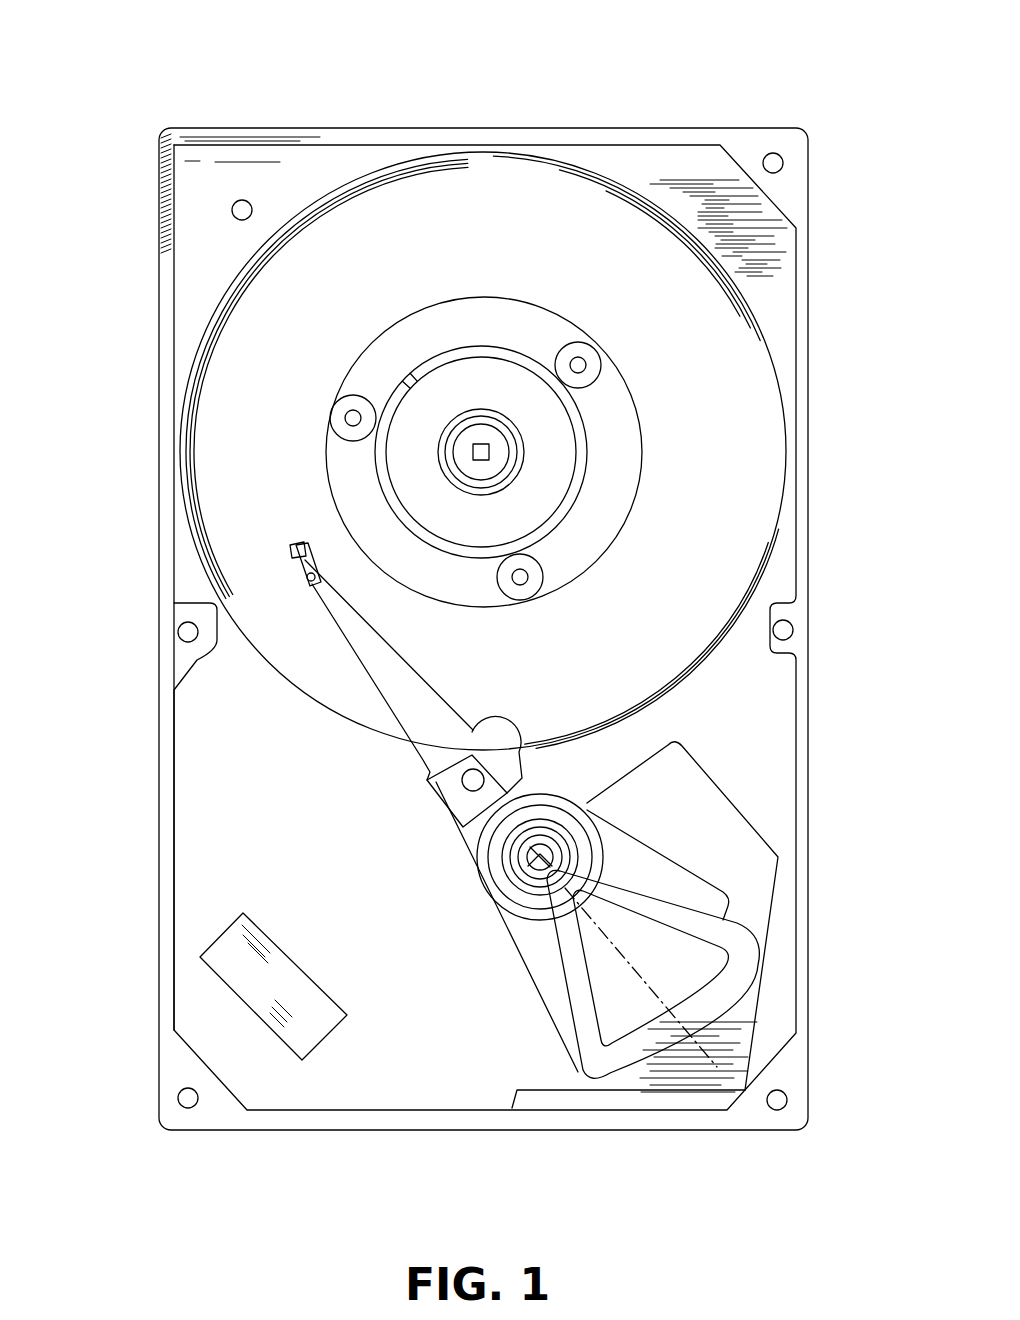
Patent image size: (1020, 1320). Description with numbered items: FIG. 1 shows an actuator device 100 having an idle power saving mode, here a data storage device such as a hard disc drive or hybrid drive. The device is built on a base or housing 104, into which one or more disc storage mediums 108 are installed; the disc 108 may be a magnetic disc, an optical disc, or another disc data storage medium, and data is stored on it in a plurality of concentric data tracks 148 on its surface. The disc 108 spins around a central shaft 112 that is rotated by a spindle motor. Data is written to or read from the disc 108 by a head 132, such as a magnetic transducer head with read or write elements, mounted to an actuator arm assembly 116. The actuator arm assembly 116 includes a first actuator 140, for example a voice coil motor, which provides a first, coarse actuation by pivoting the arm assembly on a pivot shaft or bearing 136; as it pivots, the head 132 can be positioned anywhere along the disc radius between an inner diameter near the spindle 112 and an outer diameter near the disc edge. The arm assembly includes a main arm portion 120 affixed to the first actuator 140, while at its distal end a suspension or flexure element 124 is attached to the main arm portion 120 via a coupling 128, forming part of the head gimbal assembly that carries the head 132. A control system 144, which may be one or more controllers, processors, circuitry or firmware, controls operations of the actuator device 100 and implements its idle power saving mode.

The actuator device 100 is at (494, 101).
The housing 104 is at (777, 727).
The disc 108 is at (760, 417).
The central shaft 112 is at (467, 463).
The actuator arm assembly 116 is at (350, 660).
The main arm portion 120 is at (382, 703).
The suspension or flexure element 124 is at (302, 563).
The coupling 128 is at (313, 582).
The head 132 is at (297, 549).
The pivot shaft 136 is at (540, 857).
The first actuator 140 is at (608, 1057).
The control system 144 is at (250, 997).
The concentric data tracks 148 is at (388, 172).